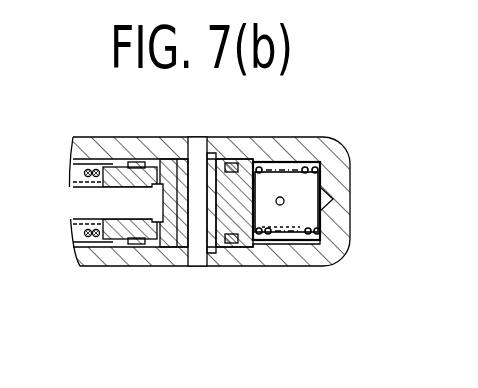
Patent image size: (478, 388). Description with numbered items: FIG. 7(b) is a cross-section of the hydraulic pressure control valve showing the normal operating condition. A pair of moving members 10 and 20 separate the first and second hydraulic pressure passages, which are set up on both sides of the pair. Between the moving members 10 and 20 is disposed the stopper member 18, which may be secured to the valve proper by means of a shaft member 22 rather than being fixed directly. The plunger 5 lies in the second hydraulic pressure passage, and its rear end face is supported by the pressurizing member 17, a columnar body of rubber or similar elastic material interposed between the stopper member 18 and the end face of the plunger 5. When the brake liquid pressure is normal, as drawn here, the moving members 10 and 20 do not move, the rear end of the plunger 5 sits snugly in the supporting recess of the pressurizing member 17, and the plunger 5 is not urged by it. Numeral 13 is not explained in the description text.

The plunger 5 is at (83, 200).
The moving member 10 is at (132, 250).
The valve piece 13 is at (292, 162).
The pressurizing member 17 is at (177, 224).
The stopper member 18 is at (229, 232).
The moving member 20 is at (267, 238).
The shaft member 22 is at (199, 138).